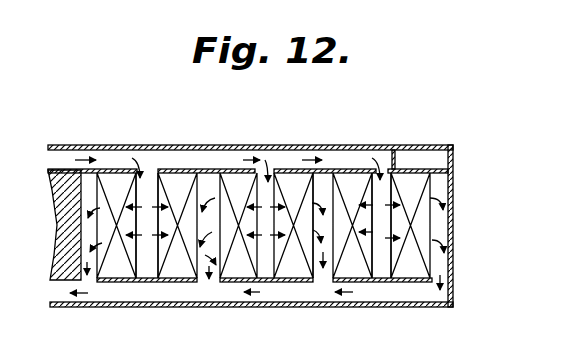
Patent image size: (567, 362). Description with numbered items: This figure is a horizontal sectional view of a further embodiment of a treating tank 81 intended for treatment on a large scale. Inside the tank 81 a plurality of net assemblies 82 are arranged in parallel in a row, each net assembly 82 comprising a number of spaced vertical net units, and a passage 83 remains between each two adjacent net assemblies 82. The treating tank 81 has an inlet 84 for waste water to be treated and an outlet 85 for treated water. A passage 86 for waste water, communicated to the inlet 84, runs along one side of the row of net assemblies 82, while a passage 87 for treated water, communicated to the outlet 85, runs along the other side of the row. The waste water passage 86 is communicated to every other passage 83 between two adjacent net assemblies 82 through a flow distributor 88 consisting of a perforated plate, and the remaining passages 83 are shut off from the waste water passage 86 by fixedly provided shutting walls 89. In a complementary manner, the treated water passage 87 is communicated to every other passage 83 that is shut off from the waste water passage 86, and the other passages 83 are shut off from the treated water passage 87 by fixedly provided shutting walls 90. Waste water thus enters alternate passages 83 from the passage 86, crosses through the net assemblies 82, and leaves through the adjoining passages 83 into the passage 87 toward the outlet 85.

The treating tank 81 is at (300, 147).
The net assembly 82 is at (114, 188).
The passage 83 is at (325, 182).
The inlet 84 is at (64, 158).
The outlet 85 is at (61, 292).
The passage for waste water 86 is at (233, 160).
The passage for treated water 87 is at (300, 290).
The flow distributor 88 is at (148, 168).
The shutting wall 89 is at (205, 172).
The shutting wall 90 is at (139, 280).